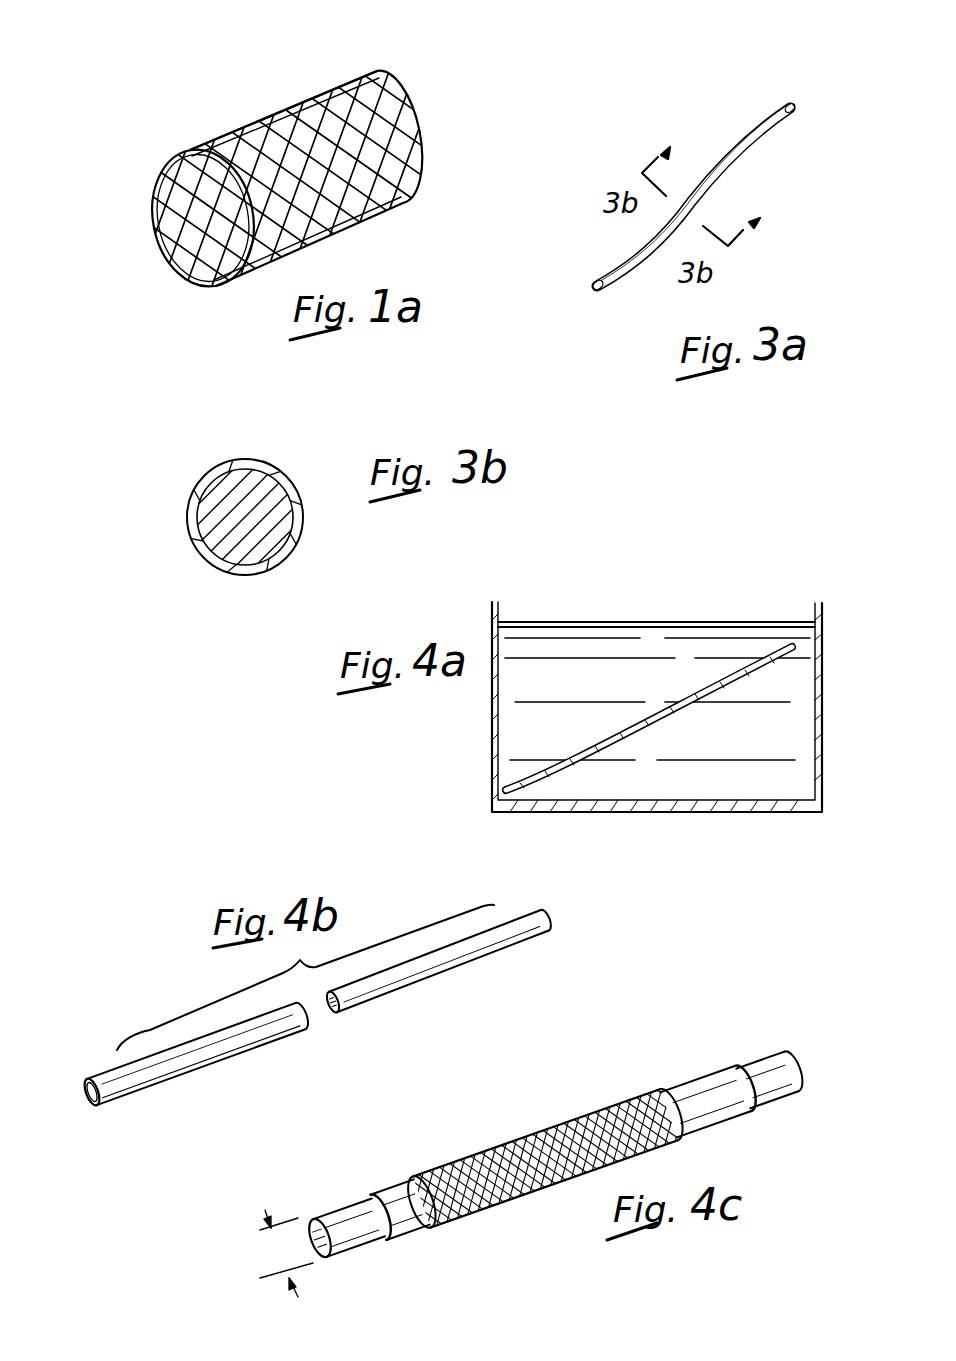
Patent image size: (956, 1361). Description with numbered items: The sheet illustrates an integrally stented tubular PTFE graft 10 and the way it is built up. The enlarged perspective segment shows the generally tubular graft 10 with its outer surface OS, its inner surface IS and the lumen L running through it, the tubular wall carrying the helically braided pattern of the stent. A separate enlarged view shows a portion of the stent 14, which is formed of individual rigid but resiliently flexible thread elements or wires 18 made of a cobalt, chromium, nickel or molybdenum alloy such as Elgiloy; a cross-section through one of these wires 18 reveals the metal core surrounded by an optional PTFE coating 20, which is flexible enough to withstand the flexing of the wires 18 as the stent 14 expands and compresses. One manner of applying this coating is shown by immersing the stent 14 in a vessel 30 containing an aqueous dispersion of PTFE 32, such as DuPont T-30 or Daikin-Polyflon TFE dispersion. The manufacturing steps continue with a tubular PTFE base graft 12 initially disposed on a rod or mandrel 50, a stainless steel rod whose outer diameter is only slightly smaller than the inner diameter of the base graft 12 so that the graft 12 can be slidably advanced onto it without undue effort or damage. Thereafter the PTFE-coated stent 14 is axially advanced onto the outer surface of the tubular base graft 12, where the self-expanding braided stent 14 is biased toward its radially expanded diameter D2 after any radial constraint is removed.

In FIG. 1A, the integrally stented tubular PTFE graft 10 is at (400, 63).
In FIG. 1A, the outer surface OS is at (297, 97).
In FIG. 1A, the inner surface IS is at (196, 235).
In FIG. 1A, the lumen L is at (205, 200).
In FIG. 3A, the wires 18 is at (762, 145).
In FIG. 3B, the wires 18 is at (286, 476).
In FIG. 3B, the PTFE coating 20 is at (302, 499).
In FIG. 4A, the PTFE-coated stent 14 is at (728, 676).
In FIG. 4C, the PTFE-coated stent 14 is at (563, 1122).
In FIG. 4A, the vessel 30 is at (822, 752).
In FIG. 4A, the aqueous dispersion of PTFE 32 is at (722, 735).
In FIG. 4B, the tubular PTFE base graft 12 is at (212, 1055).
In FIG. 4C, the tubular PTFE base graft 12 is at (708, 1085).
In FIG. 4B, the rod or mandrel 50 is at (507, 937).
In FIG. 4C, the rod or mandrel 50 is at (778, 1068).
In FIG. 4C, the radially expanded diameter D2 is at (280, 1253).